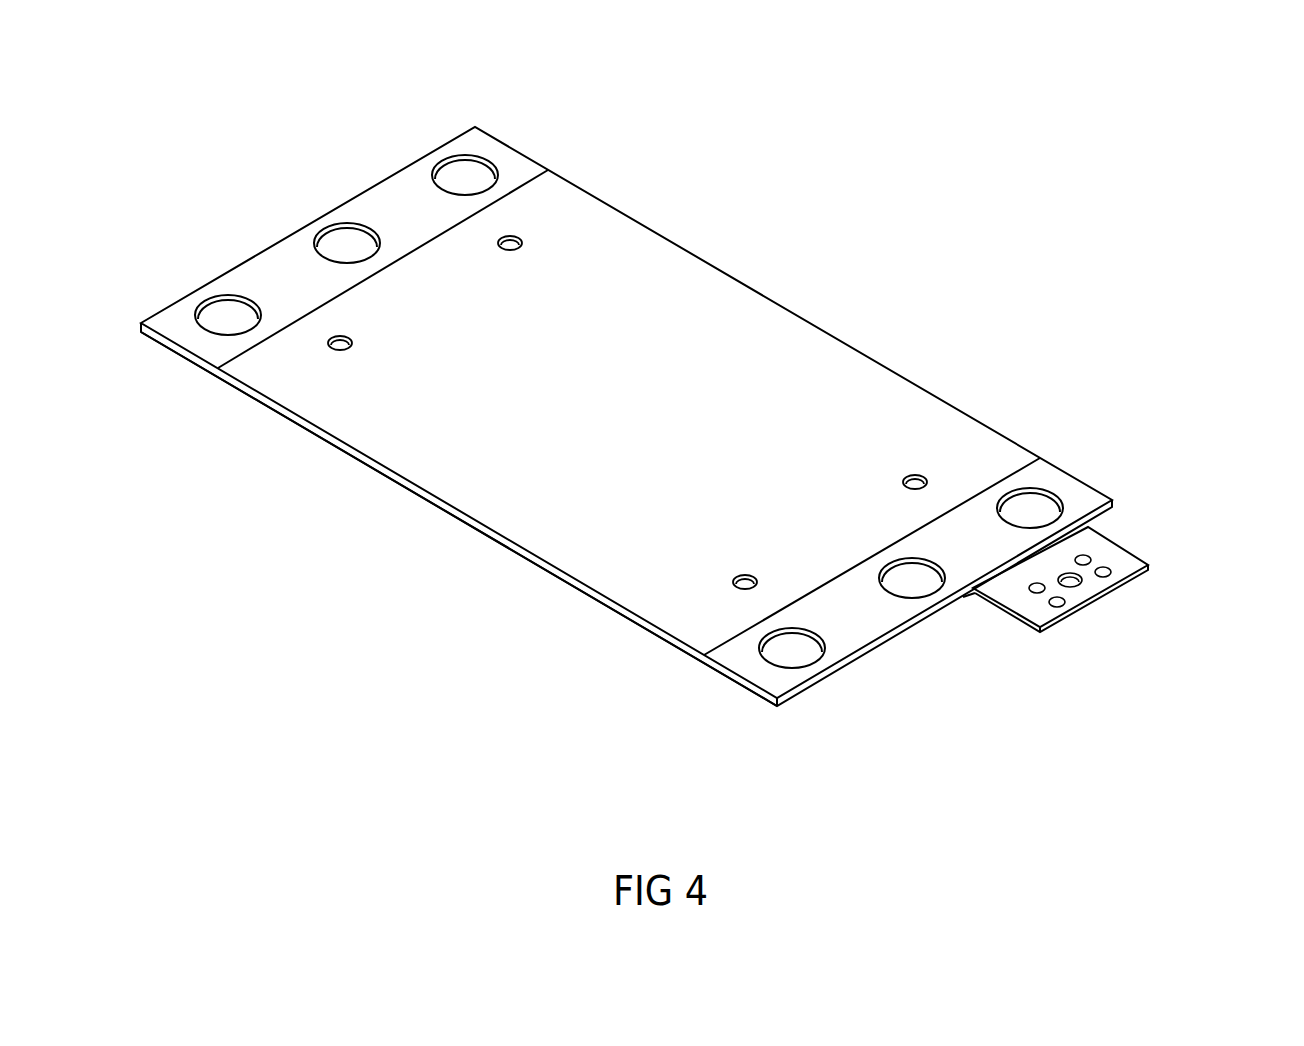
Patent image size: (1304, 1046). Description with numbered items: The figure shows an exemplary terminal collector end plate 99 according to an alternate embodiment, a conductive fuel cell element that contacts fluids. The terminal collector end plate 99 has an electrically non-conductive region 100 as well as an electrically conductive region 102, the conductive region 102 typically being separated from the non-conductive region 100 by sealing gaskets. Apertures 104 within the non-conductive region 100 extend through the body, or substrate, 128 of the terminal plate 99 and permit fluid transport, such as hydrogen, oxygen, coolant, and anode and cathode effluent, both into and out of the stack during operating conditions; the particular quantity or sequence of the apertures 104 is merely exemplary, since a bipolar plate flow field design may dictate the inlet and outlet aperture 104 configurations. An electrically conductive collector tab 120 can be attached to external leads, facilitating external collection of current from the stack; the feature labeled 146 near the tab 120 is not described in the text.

The terminal collector end plate 99 is at (1048, 300).
The electrically non-conductive region 100 is at (477, 143).
The electrically conductive region 102 is at (860, 380).
The apertures 104 is at (222, 312).
The electrically conductive collector tab 120 is at (1125, 567).
The body or substrate 128 is at (488, 533).
The tab junction 146 is at (965, 597).